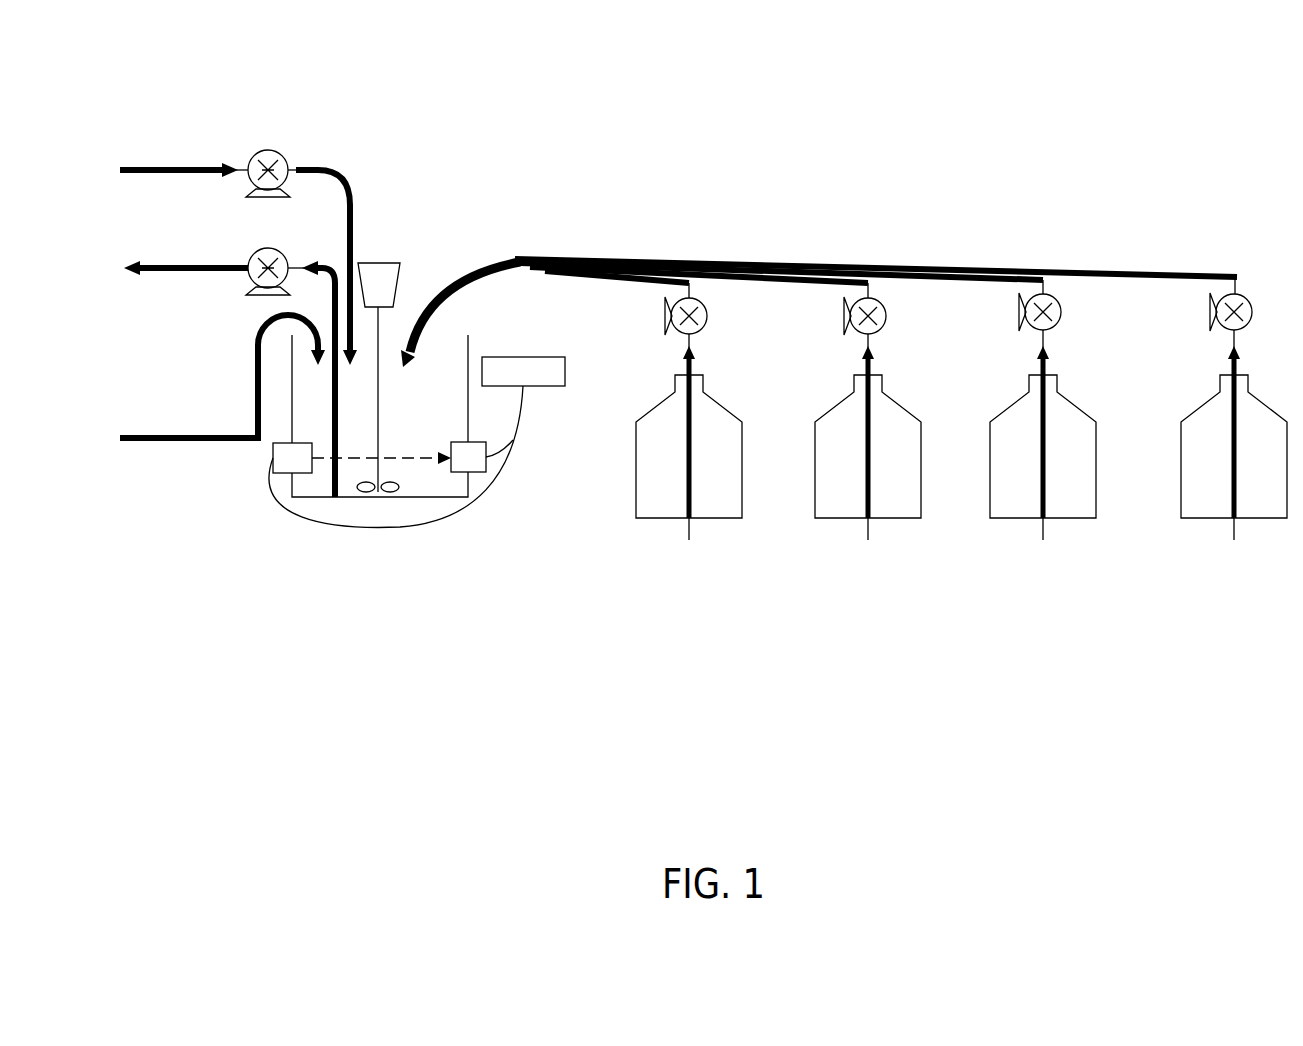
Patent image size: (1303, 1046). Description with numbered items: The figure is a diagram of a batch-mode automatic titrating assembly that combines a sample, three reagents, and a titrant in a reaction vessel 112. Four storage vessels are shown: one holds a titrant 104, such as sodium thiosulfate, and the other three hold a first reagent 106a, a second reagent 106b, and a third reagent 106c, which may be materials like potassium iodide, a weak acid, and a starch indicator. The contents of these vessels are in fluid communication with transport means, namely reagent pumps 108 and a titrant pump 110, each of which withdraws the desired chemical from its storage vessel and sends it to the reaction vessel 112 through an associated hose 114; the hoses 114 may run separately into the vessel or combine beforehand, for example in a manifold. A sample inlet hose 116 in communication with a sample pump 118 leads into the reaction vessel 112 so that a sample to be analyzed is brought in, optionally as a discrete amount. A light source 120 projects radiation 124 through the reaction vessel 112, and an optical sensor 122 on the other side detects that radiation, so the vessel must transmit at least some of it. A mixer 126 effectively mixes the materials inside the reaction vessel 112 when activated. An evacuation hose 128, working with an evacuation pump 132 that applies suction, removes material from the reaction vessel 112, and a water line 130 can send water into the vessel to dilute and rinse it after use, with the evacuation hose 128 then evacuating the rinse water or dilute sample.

The titrant 104 is at (689, 452).
The first reagent 106a is at (868, 452).
The second reagent 106b is at (1043, 450).
The third reagent 106c is at (1234, 450).
The reagent pumps 108 is at (1212, 298).
The titrant pump 110 is at (707, 318).
The reaction vessel 112 is at (463, 357).
The hose 114 is at (652, 257).
The sample inlet hose 116 is at (348, 217).
The sample pump 118 is at (267, 160).
The light source 120 is at (283, 462).
The optical sensor 122 is at (483, 462).
The radiation 124 is at (381, 440).
The mixer 126 is at (367, 488).
The evacuation hose 128 is at (187, 263).
The water line 130 is at (232, 437).
The evacuation pump 132 is at (265, 260).